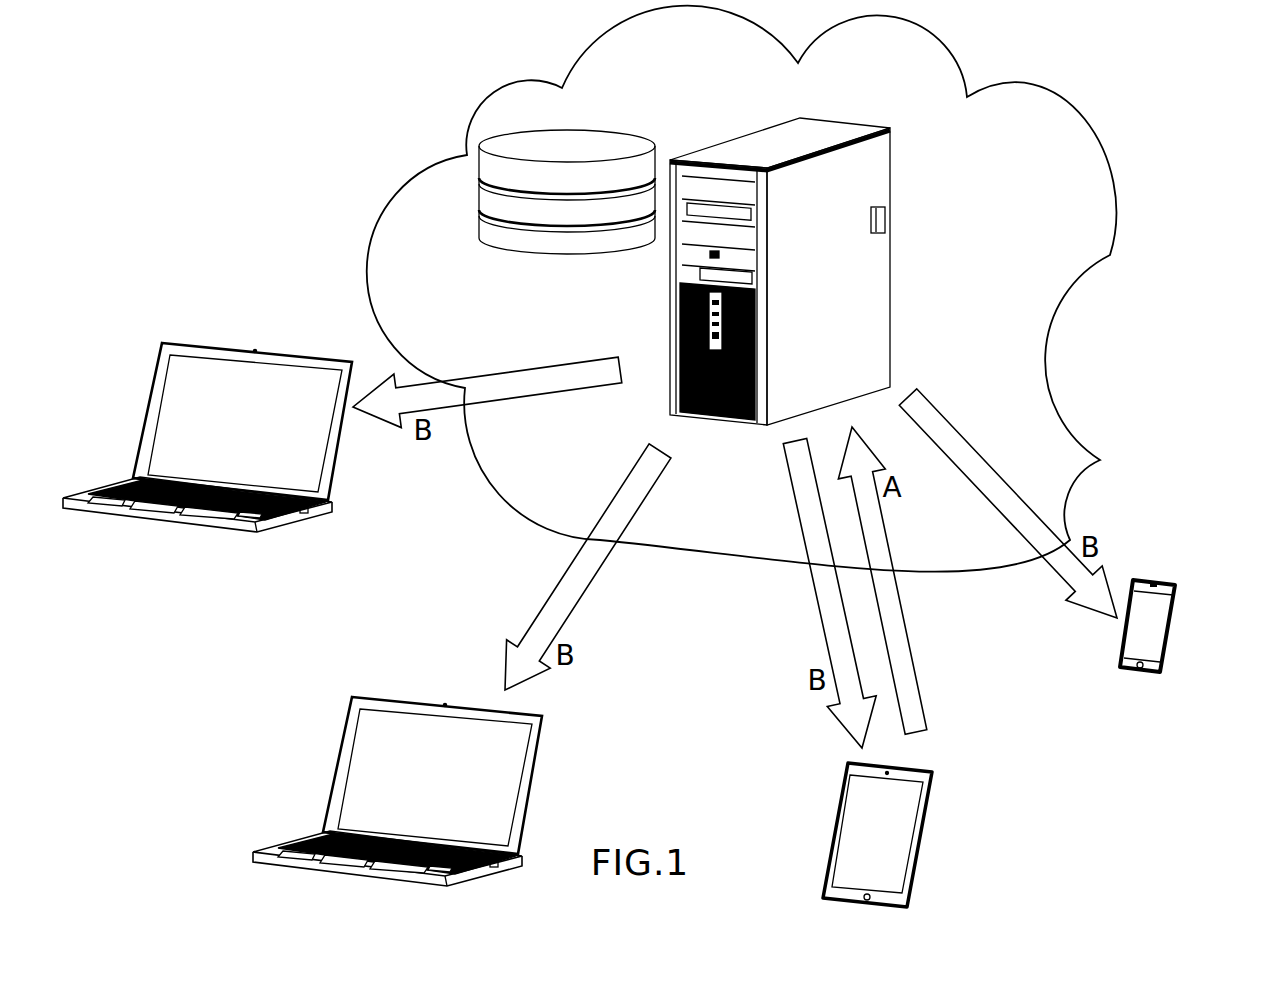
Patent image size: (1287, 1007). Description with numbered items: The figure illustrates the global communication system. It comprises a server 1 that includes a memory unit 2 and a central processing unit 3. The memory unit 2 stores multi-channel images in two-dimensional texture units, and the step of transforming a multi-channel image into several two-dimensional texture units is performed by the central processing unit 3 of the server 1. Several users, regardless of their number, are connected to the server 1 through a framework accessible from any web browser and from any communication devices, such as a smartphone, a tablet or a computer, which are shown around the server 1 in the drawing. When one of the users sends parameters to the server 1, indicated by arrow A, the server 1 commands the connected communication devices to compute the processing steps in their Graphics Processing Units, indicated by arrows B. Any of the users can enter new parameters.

The server 1 is at (1057, 130).
The memory unit 2 is at (572, 177).
The central processing unit 3 is at (858, 293).